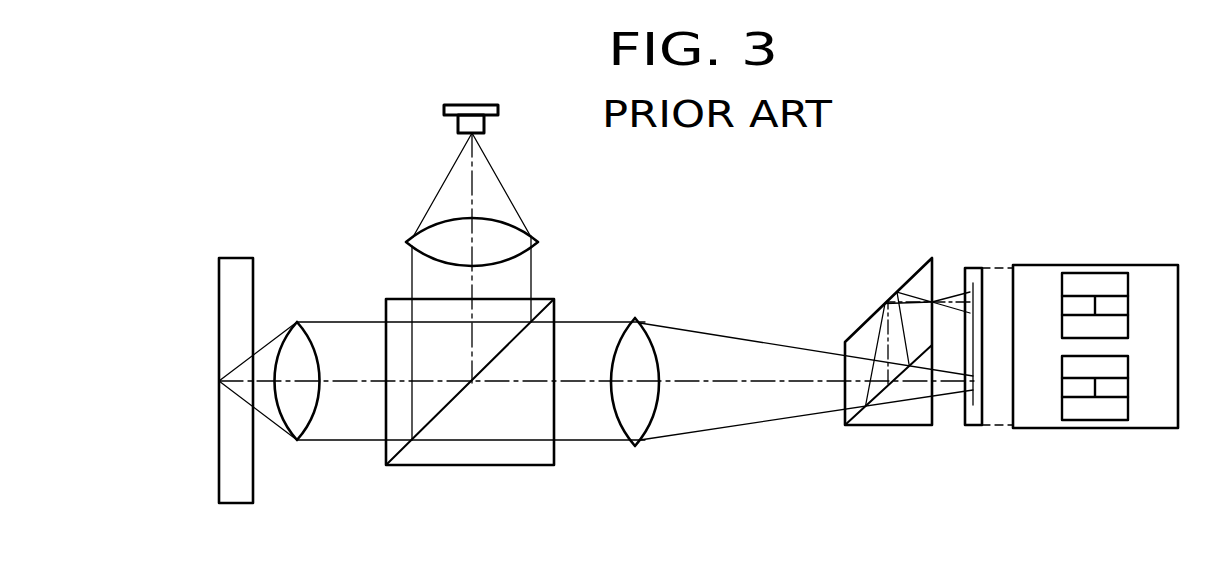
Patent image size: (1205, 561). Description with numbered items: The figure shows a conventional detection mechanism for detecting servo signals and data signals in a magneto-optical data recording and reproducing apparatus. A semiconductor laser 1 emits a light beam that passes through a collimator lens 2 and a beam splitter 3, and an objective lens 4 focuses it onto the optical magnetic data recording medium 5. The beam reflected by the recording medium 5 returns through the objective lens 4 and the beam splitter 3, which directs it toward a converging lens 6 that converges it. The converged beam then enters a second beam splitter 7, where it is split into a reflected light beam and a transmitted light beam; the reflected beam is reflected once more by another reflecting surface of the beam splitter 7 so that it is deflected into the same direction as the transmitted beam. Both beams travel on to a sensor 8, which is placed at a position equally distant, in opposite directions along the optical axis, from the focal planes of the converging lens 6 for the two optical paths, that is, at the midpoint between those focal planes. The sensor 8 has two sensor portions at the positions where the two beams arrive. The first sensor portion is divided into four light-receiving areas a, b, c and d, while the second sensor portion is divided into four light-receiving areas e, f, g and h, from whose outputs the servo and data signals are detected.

The semiconductor laser 1 is at (472, 165).
The collimator lens 2 is at (458, 329).
The beam splitter 3 is at (470, 401).
The objective lens 4 is at (432, 363).
The optical magnetic data recording medium 5 is at (236, 362).
The converging lens 6 is at (792, 364).
The beam splitter 7 is at (907, 341).
The sensor 8 is at (988, 329).
The light-receiving area a is at (1095, 285).
The light-receiving area b is at (1120, 307).
The light-receiving area c is at (1095, 327).
The light-receiving area d is at (1068, 307).
The light-receiving area e is at (1095, 368).
The light-receiving area f is at (1120, 390).
The light-receiving area g is at (1095, 409).
The light-receiving area h is at (1068, 390).